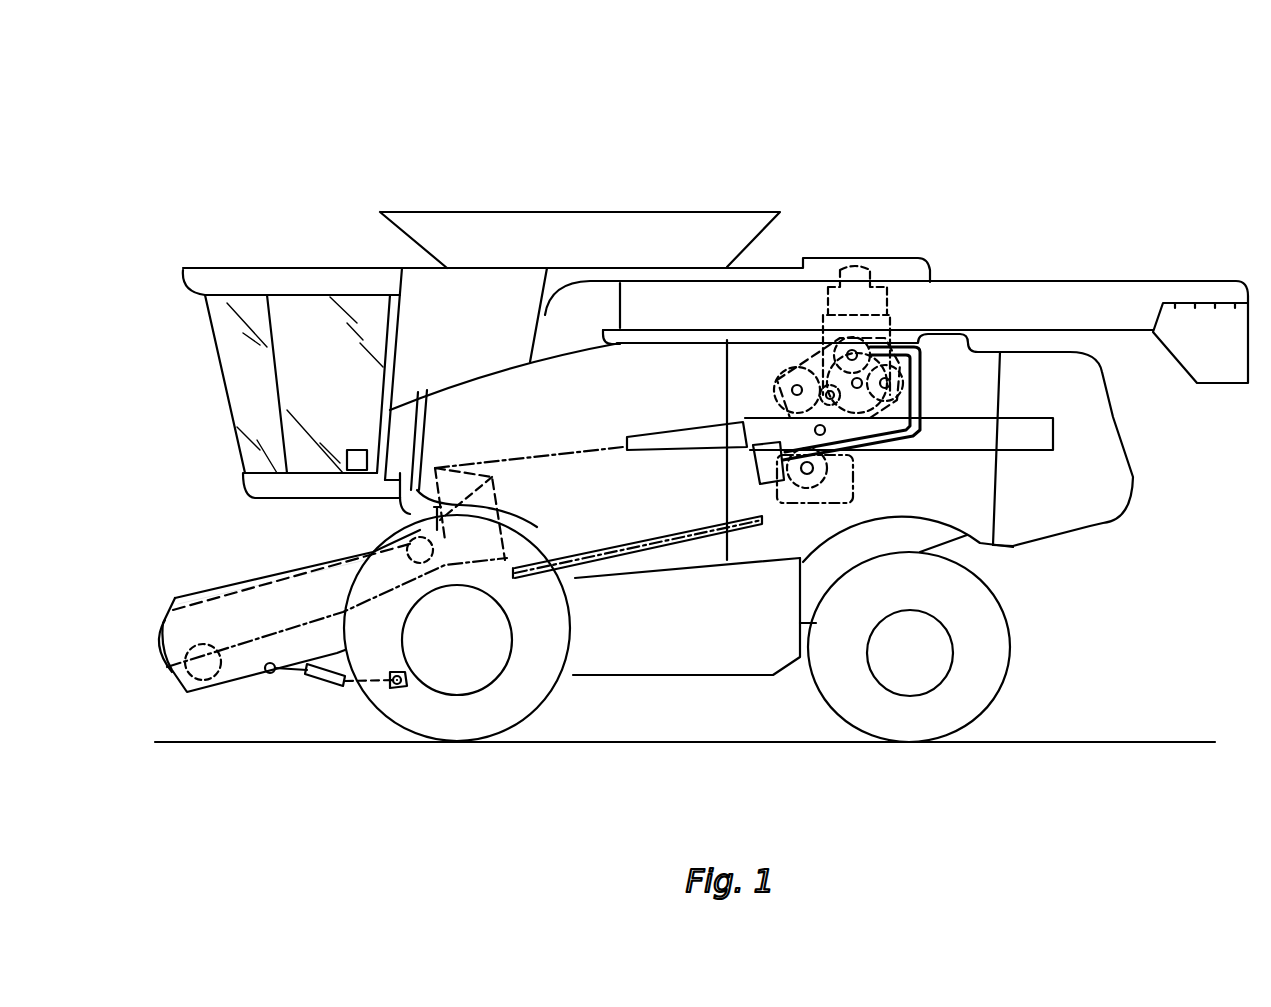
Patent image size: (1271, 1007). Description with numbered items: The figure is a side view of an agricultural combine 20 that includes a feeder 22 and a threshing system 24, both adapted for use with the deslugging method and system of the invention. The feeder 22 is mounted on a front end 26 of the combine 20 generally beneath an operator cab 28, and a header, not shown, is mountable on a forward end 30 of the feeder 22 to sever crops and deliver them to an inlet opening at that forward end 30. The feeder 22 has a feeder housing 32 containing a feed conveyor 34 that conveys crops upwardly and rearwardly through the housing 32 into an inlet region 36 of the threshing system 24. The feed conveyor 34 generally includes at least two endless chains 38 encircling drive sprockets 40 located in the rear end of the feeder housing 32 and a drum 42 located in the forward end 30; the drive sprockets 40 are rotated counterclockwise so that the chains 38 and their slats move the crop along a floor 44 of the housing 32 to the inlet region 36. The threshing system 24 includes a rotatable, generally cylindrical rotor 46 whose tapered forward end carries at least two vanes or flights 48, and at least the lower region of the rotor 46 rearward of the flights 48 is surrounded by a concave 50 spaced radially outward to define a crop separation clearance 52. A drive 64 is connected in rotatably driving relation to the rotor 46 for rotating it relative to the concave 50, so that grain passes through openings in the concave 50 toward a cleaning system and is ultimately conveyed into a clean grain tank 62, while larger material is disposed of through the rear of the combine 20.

The agricultural combine 20 is at (1152, 142).
The feeder 22 is at (198, 596).
The threshing system 24 is at (569, 458).
The front end 26 is at (403, 516).
The operator cab 28 is at (268, 268).
The forward end 30 is at (175, 672).
The feeder housing 32 is at (240, 582).
The feed conveyor 34 is at (277, 583).
The inlet region 36 is at (455, 583).
The endless chains 38 is at (253, 655).
The drive sprockets 40 is at (410, 557).
The drum 42 is at (160, 632).
The floor 44 is at (305, 628).
The rotor 46 is at (597, 450).
The vanes or flights 48 is at (447, 467).
The concave 50 is at (767, 517).
The crop separation clearance 52 is at (648, 533).
The clean grain tank 62 is at (723, 212).
The drive 64 is at (866, 465).